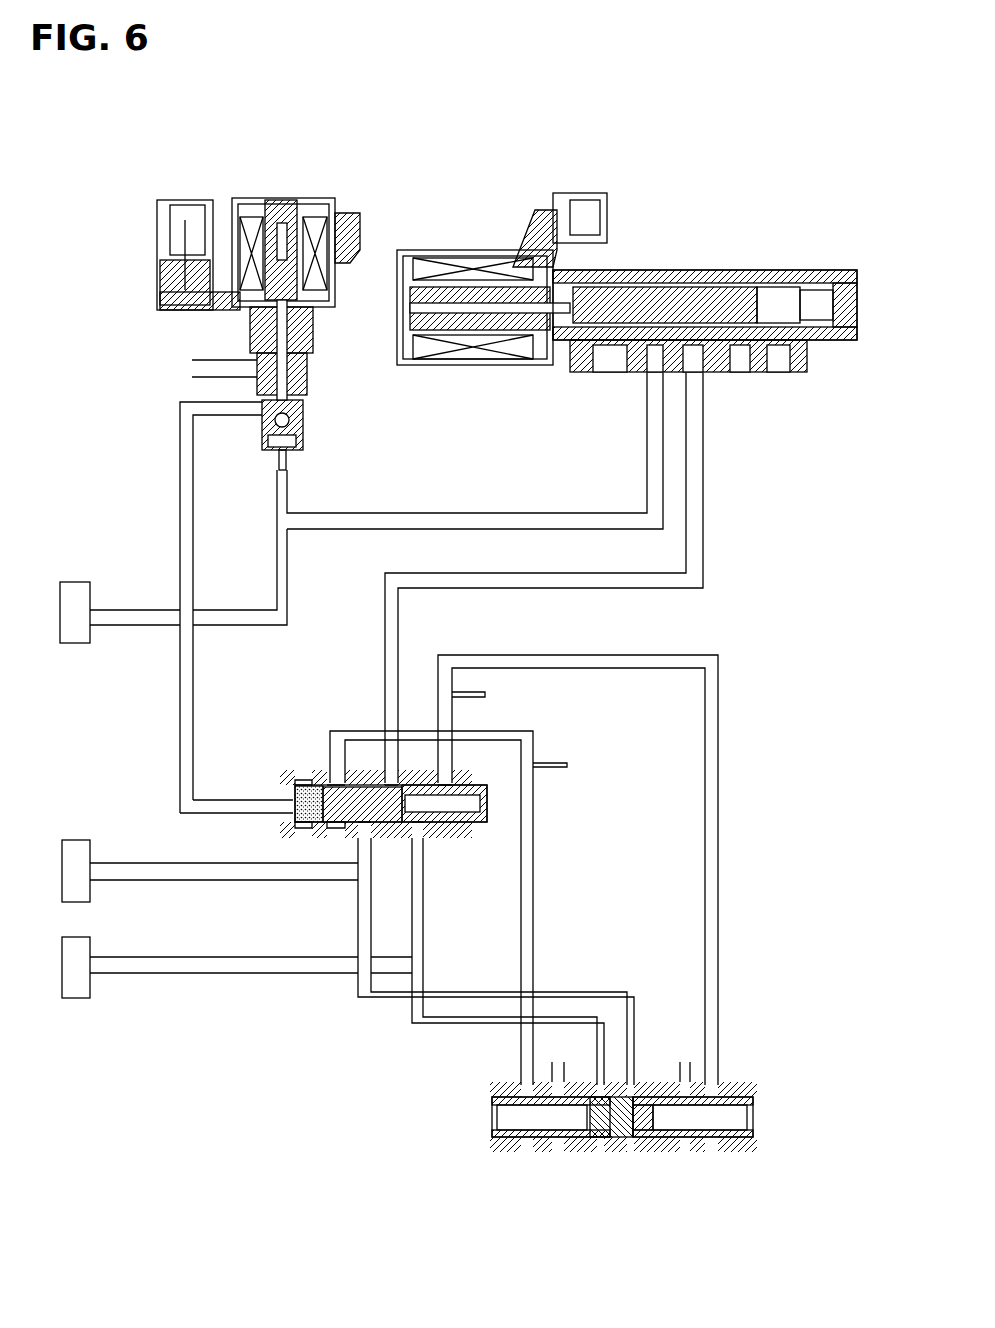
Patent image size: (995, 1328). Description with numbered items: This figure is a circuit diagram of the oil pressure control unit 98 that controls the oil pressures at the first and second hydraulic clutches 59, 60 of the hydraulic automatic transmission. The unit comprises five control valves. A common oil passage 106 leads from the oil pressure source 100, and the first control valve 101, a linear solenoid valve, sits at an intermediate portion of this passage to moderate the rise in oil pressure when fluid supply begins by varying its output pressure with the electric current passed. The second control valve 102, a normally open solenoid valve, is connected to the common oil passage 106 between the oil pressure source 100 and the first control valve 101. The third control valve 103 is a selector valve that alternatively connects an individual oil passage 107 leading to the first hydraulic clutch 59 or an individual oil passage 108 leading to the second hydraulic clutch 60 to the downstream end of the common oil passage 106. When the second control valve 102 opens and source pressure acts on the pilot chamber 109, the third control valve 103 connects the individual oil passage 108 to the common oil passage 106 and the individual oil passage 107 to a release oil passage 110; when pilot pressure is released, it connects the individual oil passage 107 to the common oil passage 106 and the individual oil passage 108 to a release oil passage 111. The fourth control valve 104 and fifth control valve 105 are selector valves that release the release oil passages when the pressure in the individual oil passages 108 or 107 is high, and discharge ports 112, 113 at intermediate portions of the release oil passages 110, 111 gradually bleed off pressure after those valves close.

The oil pressure control unit 98 is at (110, 426).
The first control valve 101 is at (655, 228).
The second control valve 102 is at (338, 198).
The oil pressure source 100 is at (78, 645).
The third control valve 103 is at (283, 793).
The fourth control valve 104 is at (702, 1154).
The fifth control valve 105 is at (545, 1154).
The common oil passage 106 is at (413, 525).
The individual oil passage 107 is at (190, 963).
The individual oil passage 108 is at (172, 873).
The pilot chamber 109 is at (305, 780).
The release oil passage 110 is at (585, 660).
The release oil passage 111 is at (528, 918).
The discharge port 112 is at (485, 696).
The discharge port 113 is at (560, 763).
The first hydraulic clutch 59 is at (75, 987).
The second hydraulic clutch 60 is at (75, 847).